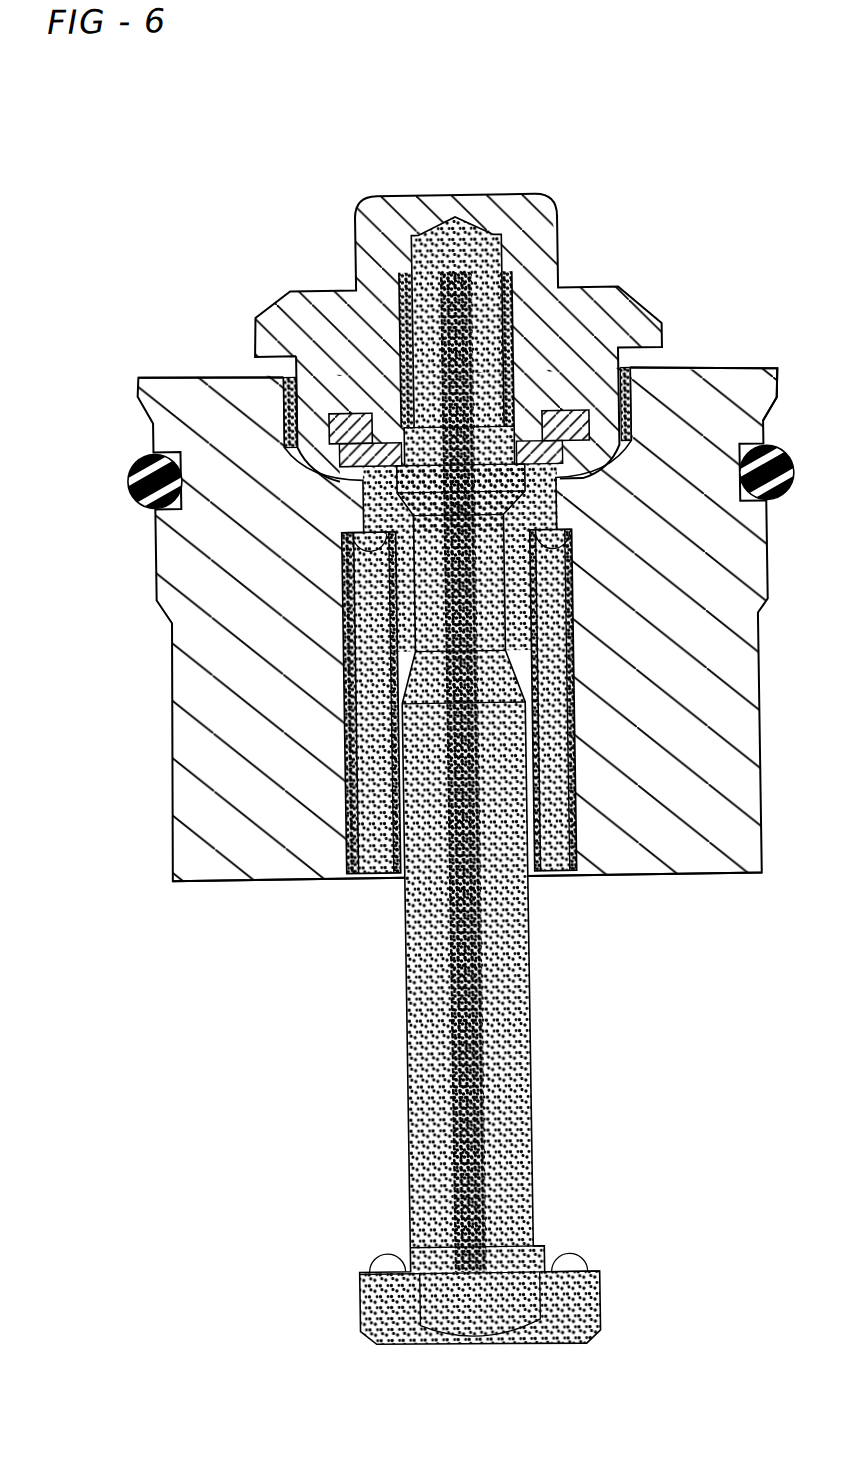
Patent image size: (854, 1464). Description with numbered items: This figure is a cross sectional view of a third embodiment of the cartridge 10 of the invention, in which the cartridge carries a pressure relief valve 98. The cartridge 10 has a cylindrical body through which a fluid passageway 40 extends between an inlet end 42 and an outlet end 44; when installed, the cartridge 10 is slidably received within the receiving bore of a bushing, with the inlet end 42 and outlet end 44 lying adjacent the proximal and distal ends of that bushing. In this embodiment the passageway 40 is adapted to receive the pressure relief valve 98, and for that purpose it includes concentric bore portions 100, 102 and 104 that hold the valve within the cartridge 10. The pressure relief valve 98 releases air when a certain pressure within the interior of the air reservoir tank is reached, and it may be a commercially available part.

The cartridge 10 is at (169, 791).
The fluid passageway 40 is at (290, 406).
The inlet end 42 is at (691, 877).
The outlet end 44 is at (196, 374).
The pressure relief valve 98 is at (476, 180).
The concentric bore portion 100 is at (653, 396).
The concentric bore portion 102 is at (569, 509).
The concentric bore portion 104 is at (578, 727).